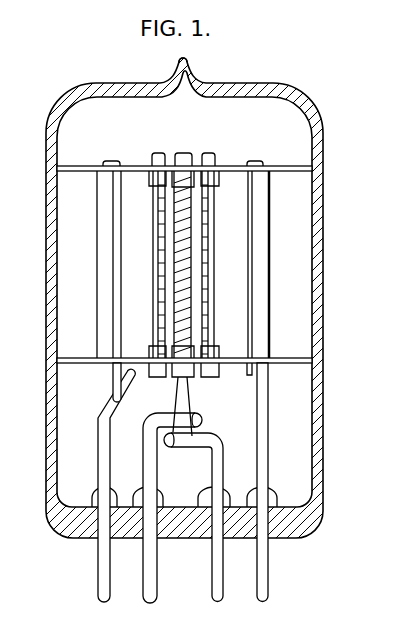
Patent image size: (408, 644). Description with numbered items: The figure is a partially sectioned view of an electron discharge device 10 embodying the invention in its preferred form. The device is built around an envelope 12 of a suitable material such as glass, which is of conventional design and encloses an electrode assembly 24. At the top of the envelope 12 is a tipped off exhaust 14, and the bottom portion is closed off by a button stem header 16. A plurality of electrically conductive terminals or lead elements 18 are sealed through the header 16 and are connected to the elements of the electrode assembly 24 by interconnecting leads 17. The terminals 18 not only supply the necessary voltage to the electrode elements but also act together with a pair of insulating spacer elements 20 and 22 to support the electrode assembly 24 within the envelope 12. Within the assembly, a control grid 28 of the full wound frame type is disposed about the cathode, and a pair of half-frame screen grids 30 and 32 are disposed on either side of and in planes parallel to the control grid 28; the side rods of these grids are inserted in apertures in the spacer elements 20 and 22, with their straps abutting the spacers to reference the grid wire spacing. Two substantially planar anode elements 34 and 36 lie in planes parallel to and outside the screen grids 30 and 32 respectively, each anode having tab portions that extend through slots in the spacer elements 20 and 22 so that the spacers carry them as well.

The electron discharge device 10 is at (358, 121).
The envelope 12 is at (46, 270).
The tipped off exhaust 14 is at (187, 71).
The button stem header 16 is at (178, 533).
The interconnecting leads 17 is at (230, 376).
The terminals or lead elements 18 is at (213, 587).
The insulating spacer element 20 is at (300, 172).
The insulating spacer element 22 is at (300, 364).
The electrode assembly 24 is at (83, 203).
The control grid 28 is at (183, 152).
The screen grid 30 is at (153, 237).
The screen grid 32 is at (214, 242).
The anode element 34 is at (107, 240).
The anode element 36 is at (271, 241).